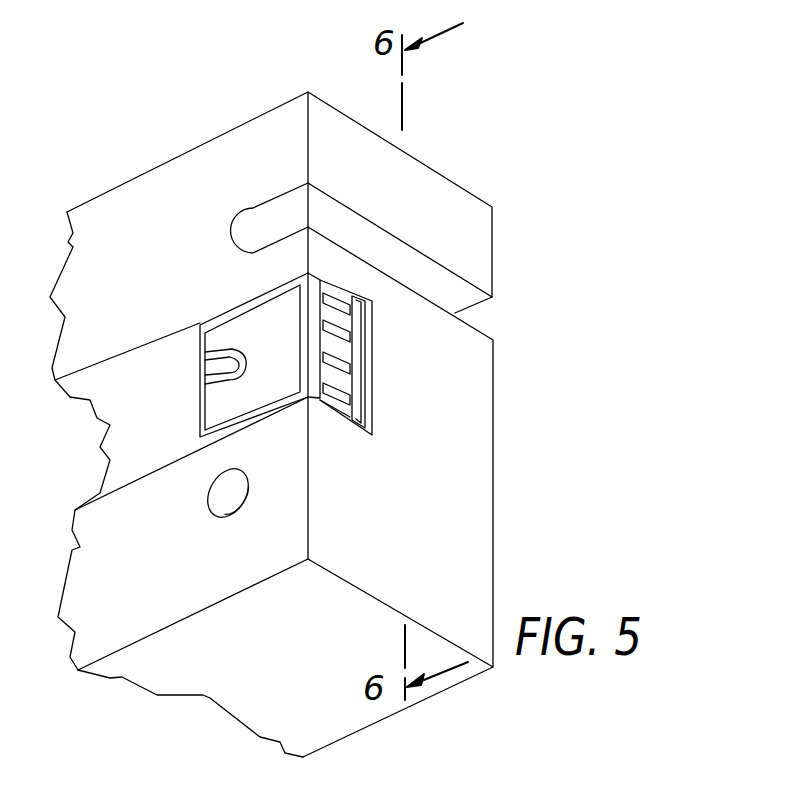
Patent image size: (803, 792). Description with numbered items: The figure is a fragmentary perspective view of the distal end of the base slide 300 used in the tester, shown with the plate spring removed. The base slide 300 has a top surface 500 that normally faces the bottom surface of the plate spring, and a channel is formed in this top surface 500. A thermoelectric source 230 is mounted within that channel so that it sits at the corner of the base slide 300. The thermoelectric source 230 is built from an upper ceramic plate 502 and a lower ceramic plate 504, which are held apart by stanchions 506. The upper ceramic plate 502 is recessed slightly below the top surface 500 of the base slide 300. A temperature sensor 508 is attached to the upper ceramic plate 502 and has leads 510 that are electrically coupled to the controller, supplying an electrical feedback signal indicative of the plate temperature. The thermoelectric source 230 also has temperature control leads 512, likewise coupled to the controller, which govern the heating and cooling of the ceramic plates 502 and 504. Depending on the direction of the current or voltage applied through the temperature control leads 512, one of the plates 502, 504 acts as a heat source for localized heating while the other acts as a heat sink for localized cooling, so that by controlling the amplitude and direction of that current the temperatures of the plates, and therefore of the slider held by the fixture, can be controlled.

The base slide 300 is at (96, 222).
The top surface 500 is at (183, 164).
The upper ceramic plate 502 is at (275, 369).
The lower ceramic plate 504 is at (358, 328).
The stanchions 506 is at (338, 390).
The temperature sensor 508 is at (223, 362).
The leads 510 is at (203, 380).
The temperature control leads 512 is at (200, 425).
The thermoelectric source 230 is at (333, 410).